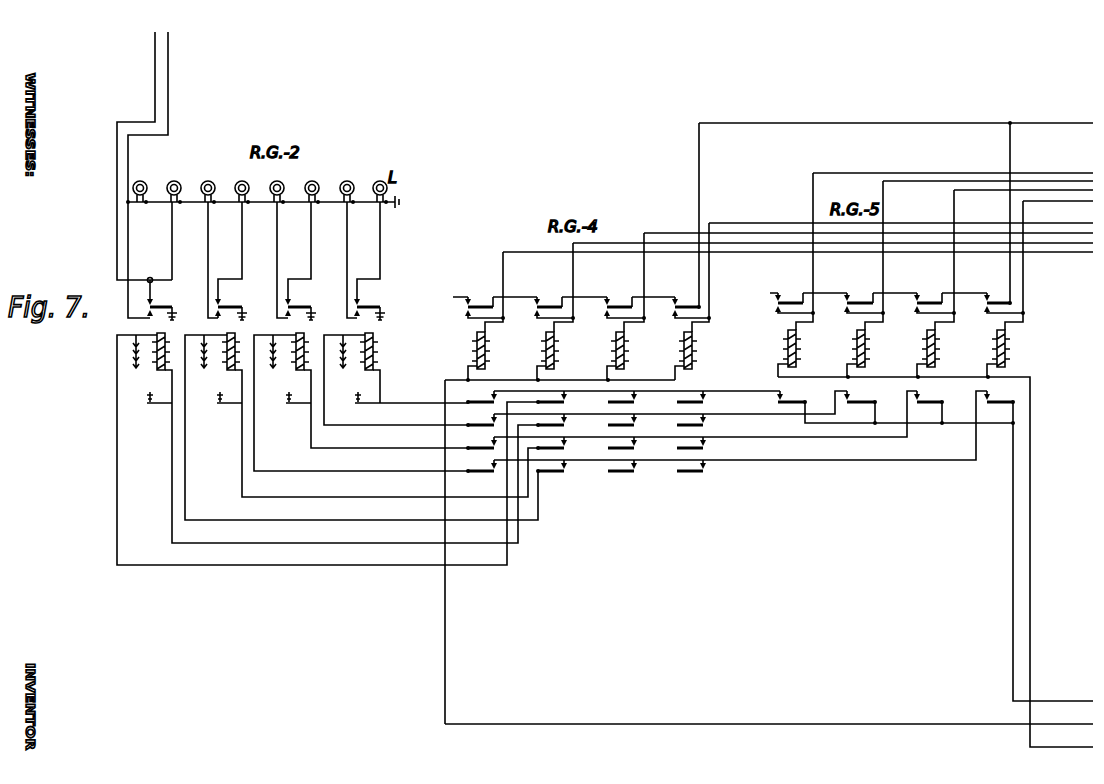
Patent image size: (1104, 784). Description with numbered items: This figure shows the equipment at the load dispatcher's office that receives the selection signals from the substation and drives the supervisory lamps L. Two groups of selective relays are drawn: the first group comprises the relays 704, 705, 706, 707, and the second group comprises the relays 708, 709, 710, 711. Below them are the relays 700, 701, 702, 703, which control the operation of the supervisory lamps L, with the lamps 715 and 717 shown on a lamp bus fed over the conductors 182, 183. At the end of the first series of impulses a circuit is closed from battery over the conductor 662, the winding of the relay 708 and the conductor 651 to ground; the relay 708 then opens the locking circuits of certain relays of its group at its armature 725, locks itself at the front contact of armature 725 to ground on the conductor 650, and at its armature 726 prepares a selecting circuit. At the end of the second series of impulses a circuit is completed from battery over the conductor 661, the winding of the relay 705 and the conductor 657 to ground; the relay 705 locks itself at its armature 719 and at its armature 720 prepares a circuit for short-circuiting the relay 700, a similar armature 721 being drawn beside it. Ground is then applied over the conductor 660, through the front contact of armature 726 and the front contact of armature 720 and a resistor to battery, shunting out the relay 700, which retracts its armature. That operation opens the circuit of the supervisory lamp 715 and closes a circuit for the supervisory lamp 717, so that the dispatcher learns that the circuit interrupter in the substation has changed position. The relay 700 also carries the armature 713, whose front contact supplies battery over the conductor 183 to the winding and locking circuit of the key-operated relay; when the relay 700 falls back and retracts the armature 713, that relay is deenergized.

The supply conductor 182 is at (157, 74).
The conductor 183 is at (170, 100).
The supervisory lamp 715 is at (139, 181).
The supervisory lamp 717 is at (177, 182).
The armature 713 is at (158, 309).
The relay 700 is at (160, 372).
The relay 701 is at (230, 372).
The relay 702 is at (299, 372).
The relay 703 is at (368, 372).
The relay 704 is at (488, 349).
The relay 705 is at (560, 311).
The relay 706 is at (629, 349).
The relay 707 is at (700, 349).
The relay 708 is at (805, 275).
The relay 709 is at (870, 349).
The relay 710 is at (941, 349).
The relay 711 is at (1011, 349).
The armature 719 is at (545, 305).
The armature 720 is at (561, 404).
The contact 721 is at (561, 427).
The armature 725 is at (789, 301).
The armature 726 is at (790, 404).
The conductor 650 is at (1062, 117).
The conductor 651 is at (927, 174).
The conductor 657 is at (1073, 252).
The conductor 660 is at (1083, 698).
The conductor 661 is at (1081, 721).
The conductor 662 is at (1081, 744).